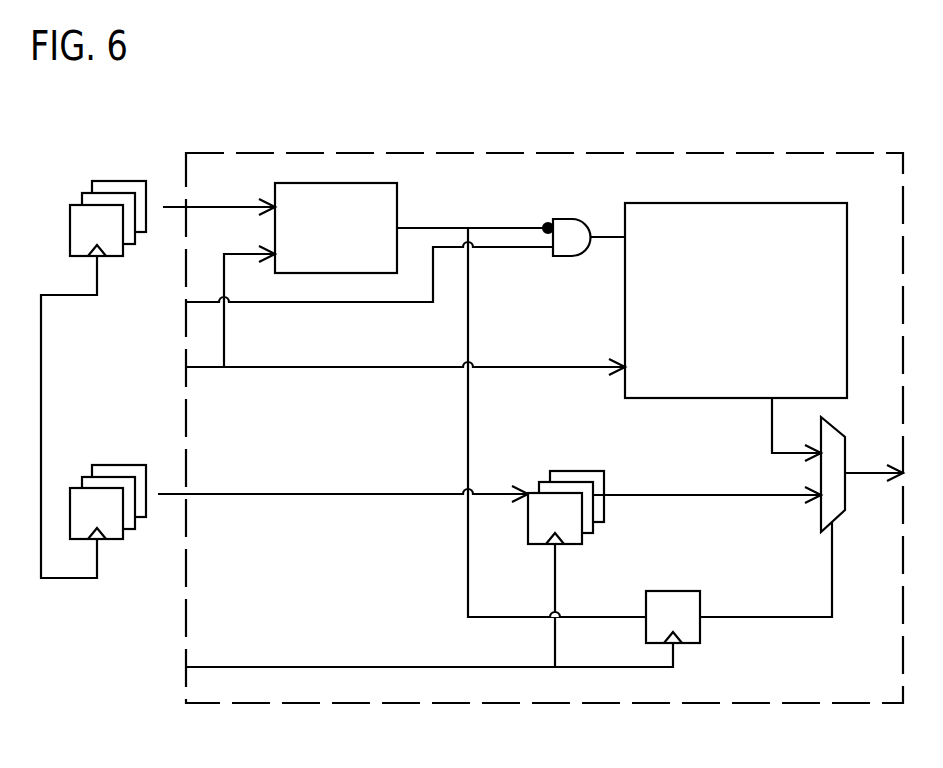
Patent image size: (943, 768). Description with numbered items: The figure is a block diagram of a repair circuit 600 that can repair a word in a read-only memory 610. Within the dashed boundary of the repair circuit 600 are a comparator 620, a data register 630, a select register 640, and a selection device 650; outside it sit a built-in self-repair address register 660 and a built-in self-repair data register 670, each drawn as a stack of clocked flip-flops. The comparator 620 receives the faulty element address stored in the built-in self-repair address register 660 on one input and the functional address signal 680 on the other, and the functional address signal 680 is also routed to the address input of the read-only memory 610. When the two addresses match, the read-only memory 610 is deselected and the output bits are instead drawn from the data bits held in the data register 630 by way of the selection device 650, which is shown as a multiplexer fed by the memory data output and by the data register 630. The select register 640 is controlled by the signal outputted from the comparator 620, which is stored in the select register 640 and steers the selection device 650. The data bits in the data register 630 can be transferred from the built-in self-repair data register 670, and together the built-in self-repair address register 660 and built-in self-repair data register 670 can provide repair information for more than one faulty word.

The repair circuit 600 is at (685, 152).
The read-only memory 610 is at (790, 304).
The comparator 620 is at (358, 259).
The data register 630 is at (611, 484).
The select register 640 is at (705, 625).
The selection device 650 is at (847, 513).
The built-in self-repair address register 660 is at (131, 254).
The built-in self-repair data register 670 is at (131, 541).
The functional address signal 680 is at (183, 366).